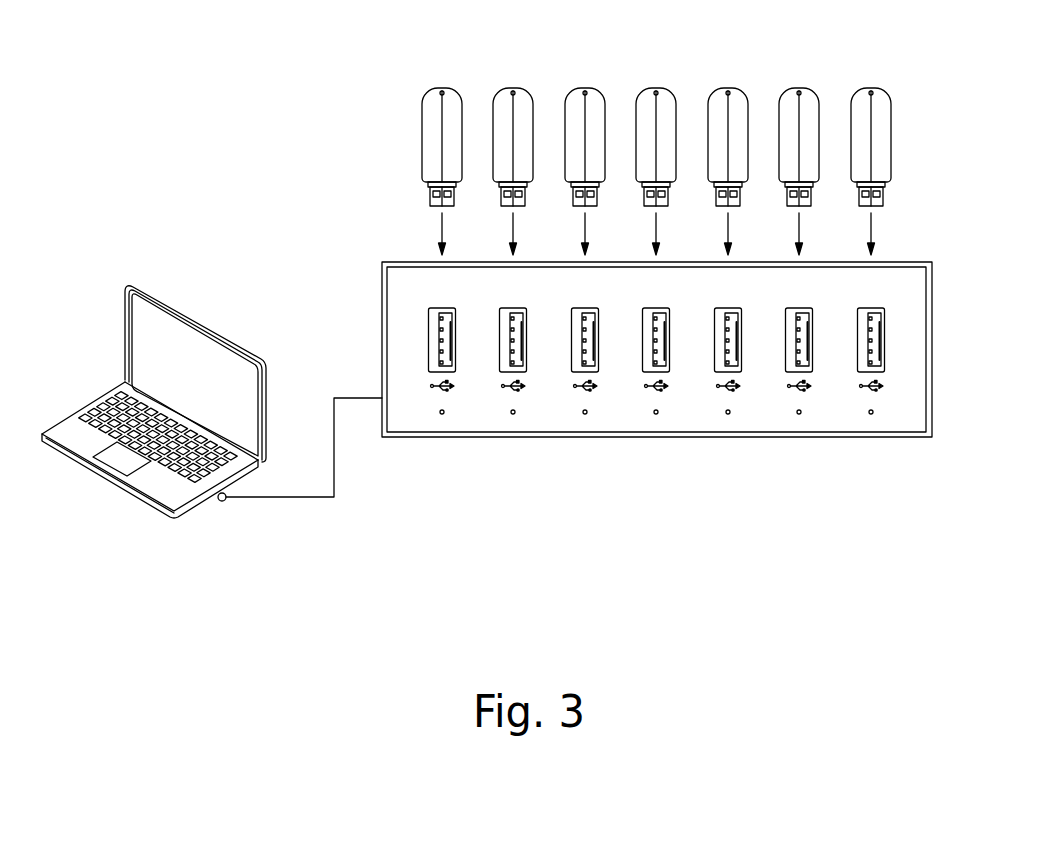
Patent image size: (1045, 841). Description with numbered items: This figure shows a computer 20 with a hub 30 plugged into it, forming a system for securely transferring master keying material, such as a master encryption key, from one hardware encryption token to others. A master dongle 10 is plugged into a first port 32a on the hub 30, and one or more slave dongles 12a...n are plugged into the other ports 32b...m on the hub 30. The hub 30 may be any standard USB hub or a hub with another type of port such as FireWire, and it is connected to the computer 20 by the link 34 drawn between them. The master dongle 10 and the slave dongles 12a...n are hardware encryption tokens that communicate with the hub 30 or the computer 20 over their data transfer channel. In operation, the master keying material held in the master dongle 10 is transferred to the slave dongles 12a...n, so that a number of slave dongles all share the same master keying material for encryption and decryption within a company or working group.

The master dongle 10 is at (442, 79).
The slave dongles 12a...n is at (656, 79).
The computer 20 is at (174, 515).
The hub 30 is at (763, 437).
The first port 32a is at (442, 412).
The other ports 32b...m is at (513, 412).
The connection cable 34 is at (309, 497).